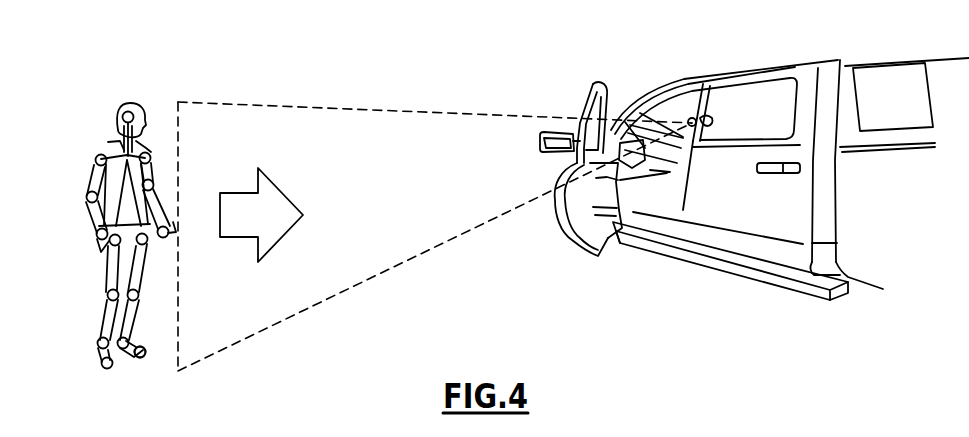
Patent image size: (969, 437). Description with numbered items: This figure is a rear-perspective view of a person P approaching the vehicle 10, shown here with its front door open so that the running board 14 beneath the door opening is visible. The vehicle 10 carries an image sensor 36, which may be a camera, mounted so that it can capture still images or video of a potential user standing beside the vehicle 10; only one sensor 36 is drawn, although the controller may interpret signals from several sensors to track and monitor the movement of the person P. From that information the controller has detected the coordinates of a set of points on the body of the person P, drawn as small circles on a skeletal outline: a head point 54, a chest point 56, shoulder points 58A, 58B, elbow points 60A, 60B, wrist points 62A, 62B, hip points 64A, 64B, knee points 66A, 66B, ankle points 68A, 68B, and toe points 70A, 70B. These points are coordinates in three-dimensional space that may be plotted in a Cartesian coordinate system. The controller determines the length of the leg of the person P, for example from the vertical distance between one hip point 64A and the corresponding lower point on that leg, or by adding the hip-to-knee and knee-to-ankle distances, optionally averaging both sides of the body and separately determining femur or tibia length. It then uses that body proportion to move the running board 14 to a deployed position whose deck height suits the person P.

The person P is at (142, 85).
The head point 54 is at (121, 106).
The chest point 56 is at (141, 152).
The shoulder point 58A is at (96, 157).
The shoulder point 58B is at (150, 156).
The elbow point 60A is at (88, 197).
The elbow point 60B is at (152, 184).
The wrist point 62A is at (97, 233).
The wrist point 62B is at (166, 229).
The hip point 64A is at (106, 246).
The hip point 64B is at (147, 241).
The knee point 66A is at (108, 295).
The knee point 66B is at (139, 295).
The ankle point 68A is at (98, 343).
The ankle point 68B is at (140, 347).
The toe point 70A is at (103, 367).
The toe point 70B is at (146, 356).
The vehicle 10 is at (666, 72).
The image sensor 36 is at (697, 118).
The running board 14 is at (805, 308).